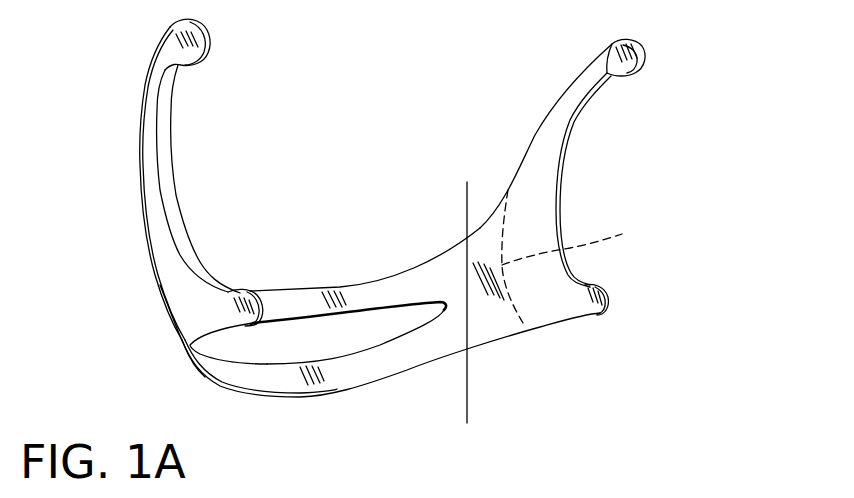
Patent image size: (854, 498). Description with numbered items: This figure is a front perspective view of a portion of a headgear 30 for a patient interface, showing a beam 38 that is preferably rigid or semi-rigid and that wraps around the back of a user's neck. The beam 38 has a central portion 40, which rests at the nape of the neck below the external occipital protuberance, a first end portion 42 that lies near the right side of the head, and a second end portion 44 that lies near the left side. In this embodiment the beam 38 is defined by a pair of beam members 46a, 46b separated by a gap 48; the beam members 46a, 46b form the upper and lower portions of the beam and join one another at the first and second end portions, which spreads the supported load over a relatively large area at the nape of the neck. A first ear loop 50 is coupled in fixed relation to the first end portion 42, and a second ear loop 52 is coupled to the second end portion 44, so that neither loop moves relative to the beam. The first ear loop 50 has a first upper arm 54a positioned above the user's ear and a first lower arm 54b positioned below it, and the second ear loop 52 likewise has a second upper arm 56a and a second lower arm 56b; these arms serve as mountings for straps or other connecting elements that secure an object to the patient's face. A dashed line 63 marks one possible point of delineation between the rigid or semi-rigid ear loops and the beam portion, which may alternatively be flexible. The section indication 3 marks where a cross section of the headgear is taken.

The headgear 30 is at (684, 119).
The beam 38 is at (533, 323).
The central portion 40 is at (280, 396).
The first end portion 42 is at (178, 333).
The second end portion 44 is at (478, 318).
The beam member 46a is at (300, 293).
The beam member 46b is at (335, 396).
The gap 48 is at (357, 311).
The first ear loop 50 is at (152, 265).
The second ear loop 52 is at (545, 170).
The first upper arm 54a is at (188, 43).
The first lower arm 54b is at (243, 293).
The second upper arm 56a is at (640, 52).
The second lower arm 56b is at (606, 302).
The dashed line 63 is at (583, 239).
The section line 3- 3 is at (467, 182).